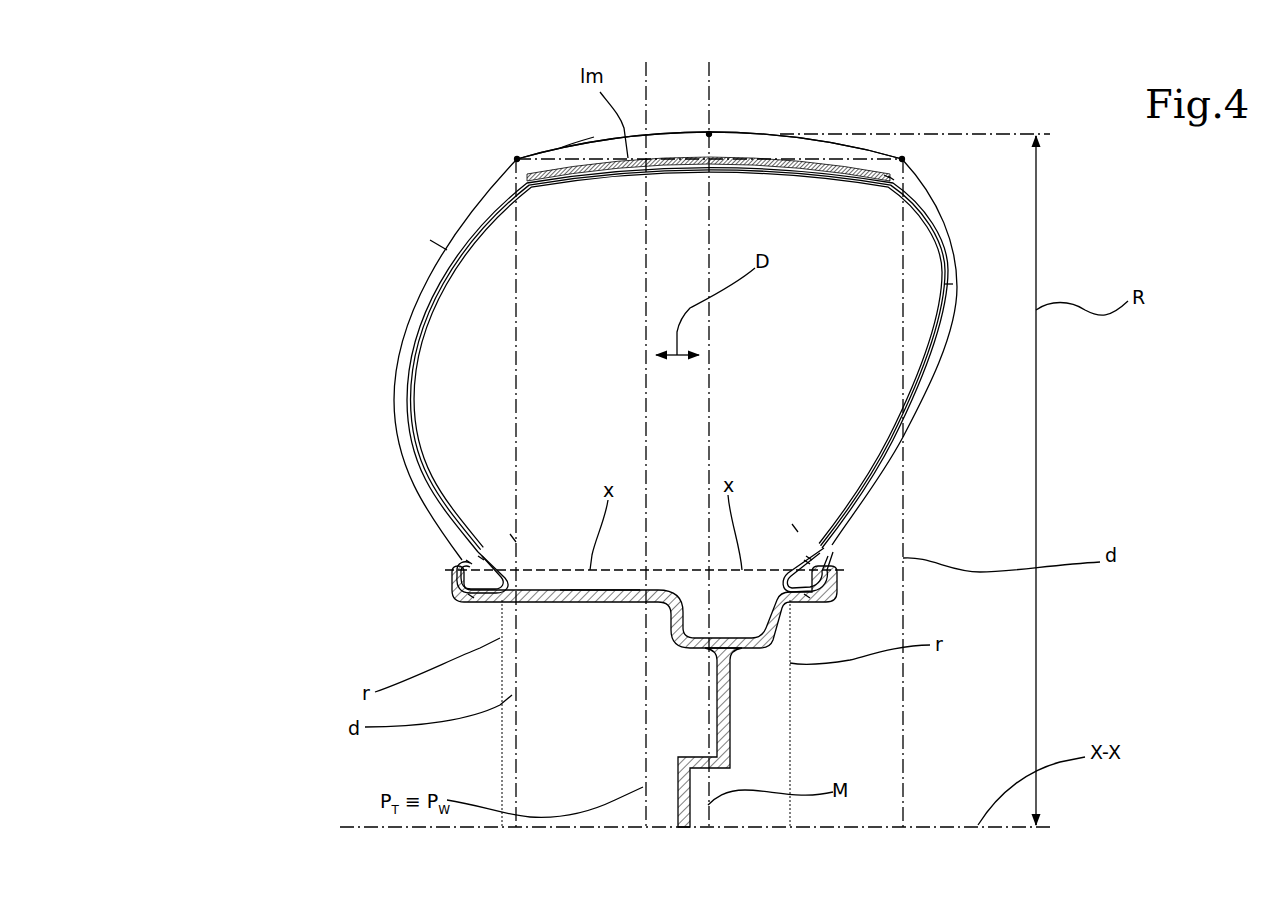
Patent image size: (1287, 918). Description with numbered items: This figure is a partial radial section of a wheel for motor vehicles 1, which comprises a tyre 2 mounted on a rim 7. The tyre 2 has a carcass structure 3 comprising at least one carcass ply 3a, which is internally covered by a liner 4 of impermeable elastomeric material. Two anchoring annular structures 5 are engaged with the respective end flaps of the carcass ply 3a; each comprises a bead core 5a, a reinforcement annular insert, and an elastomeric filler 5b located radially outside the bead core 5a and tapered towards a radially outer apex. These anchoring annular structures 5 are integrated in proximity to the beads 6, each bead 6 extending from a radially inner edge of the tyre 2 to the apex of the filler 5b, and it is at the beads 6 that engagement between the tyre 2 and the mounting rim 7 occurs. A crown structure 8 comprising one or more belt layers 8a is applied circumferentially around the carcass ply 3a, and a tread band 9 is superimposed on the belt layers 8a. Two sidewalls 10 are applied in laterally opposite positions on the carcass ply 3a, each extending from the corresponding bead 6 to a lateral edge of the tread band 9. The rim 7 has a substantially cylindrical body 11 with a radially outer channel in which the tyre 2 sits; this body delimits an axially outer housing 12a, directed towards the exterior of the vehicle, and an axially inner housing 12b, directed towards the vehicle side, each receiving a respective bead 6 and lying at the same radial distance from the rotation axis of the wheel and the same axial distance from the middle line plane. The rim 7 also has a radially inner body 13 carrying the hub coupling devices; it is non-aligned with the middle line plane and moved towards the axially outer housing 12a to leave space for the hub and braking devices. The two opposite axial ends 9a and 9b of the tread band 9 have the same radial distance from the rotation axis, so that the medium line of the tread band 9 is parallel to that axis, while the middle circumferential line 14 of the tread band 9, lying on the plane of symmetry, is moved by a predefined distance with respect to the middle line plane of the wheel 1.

The wheel for motor vehicles 1 is at (280, 692).
The tyre 2 is at (283, 303).
The carcass structure 3 is at (597, 178).
The carcass ply 3a is at (610, 172).
The liner 4 is at (442, 280).
The anchoring annular structure 5 is at (478, 530).
The bead core 5a is at (470, 597).
The elastomeric filler 5b is at (480, 557).
The bead 6 is at (520, 528).
The mounting rim 7 is at (750, 765).
The crown structure 8 is at (841, 152).
The belt layer 8a is at (890, 178).
The tread band 9 is at (594, 138).
The axial end of the tread band 9a is at (517, 159).
The axial end of the tread band 9b is at (903, 159).
The sidewall 10 is at (447, 250).
The substantially cylindrical body 11 is at (620, 615).
The axially outer housing 12a is at (808, 558).
The axially inner housing 12b is at (470, 562).
The radially inner body 13 is at (748, 746).
The middle circumferential line 14 is at (709, 134).